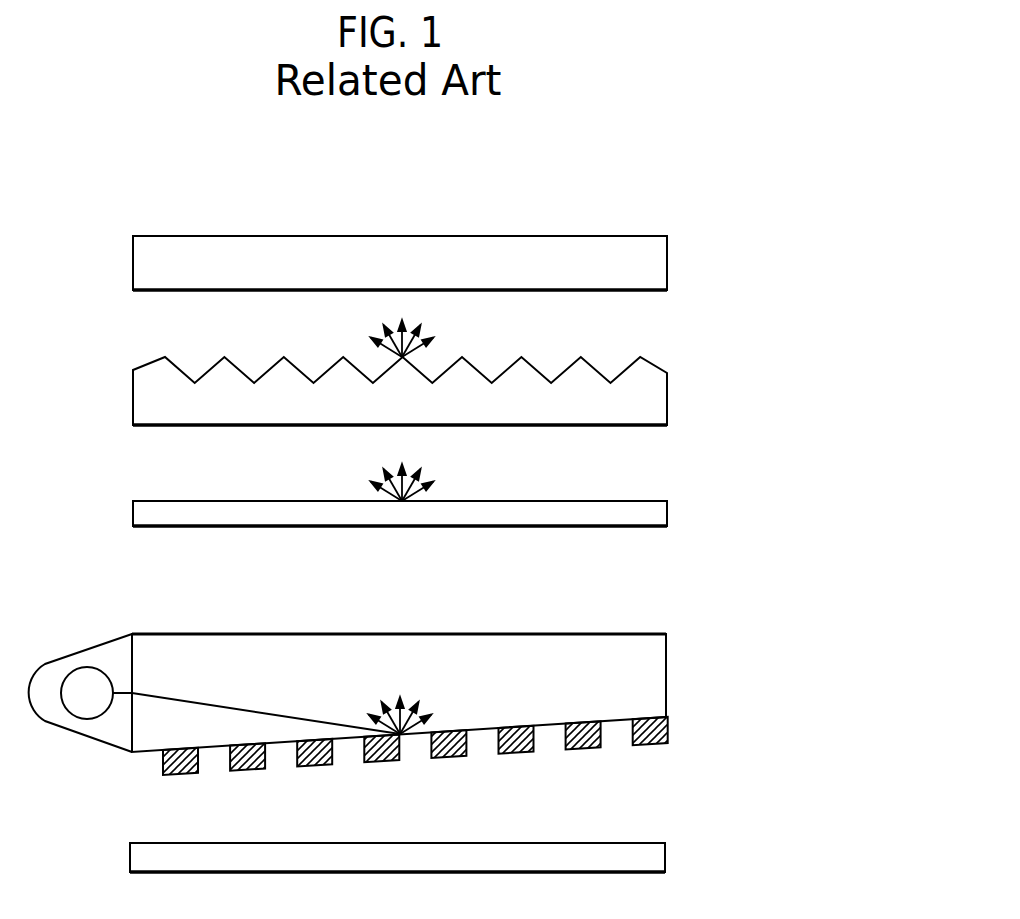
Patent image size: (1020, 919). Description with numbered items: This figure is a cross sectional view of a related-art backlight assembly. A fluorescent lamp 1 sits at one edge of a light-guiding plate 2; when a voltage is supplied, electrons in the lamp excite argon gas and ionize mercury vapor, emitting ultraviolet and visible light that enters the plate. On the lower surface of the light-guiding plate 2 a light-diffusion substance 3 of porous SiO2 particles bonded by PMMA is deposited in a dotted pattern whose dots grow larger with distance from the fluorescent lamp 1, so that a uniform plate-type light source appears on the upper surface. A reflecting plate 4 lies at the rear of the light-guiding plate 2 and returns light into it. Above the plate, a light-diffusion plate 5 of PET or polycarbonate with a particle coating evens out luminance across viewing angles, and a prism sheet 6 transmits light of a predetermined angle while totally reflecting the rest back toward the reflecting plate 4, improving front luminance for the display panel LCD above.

The fluorescent lamp 1 is at (83, 673).
The light-guiding plate 2 is at (662, 678).
The light-diffusion substance 3 is at (662, 732).
The reflecting plate 4 is at (662, 857).
The light-diffusion plate 5 is at (662, 515).
The prism sheet 6 is at (662, 402).
The liquid crystal display panel LCD is at (662, 268).